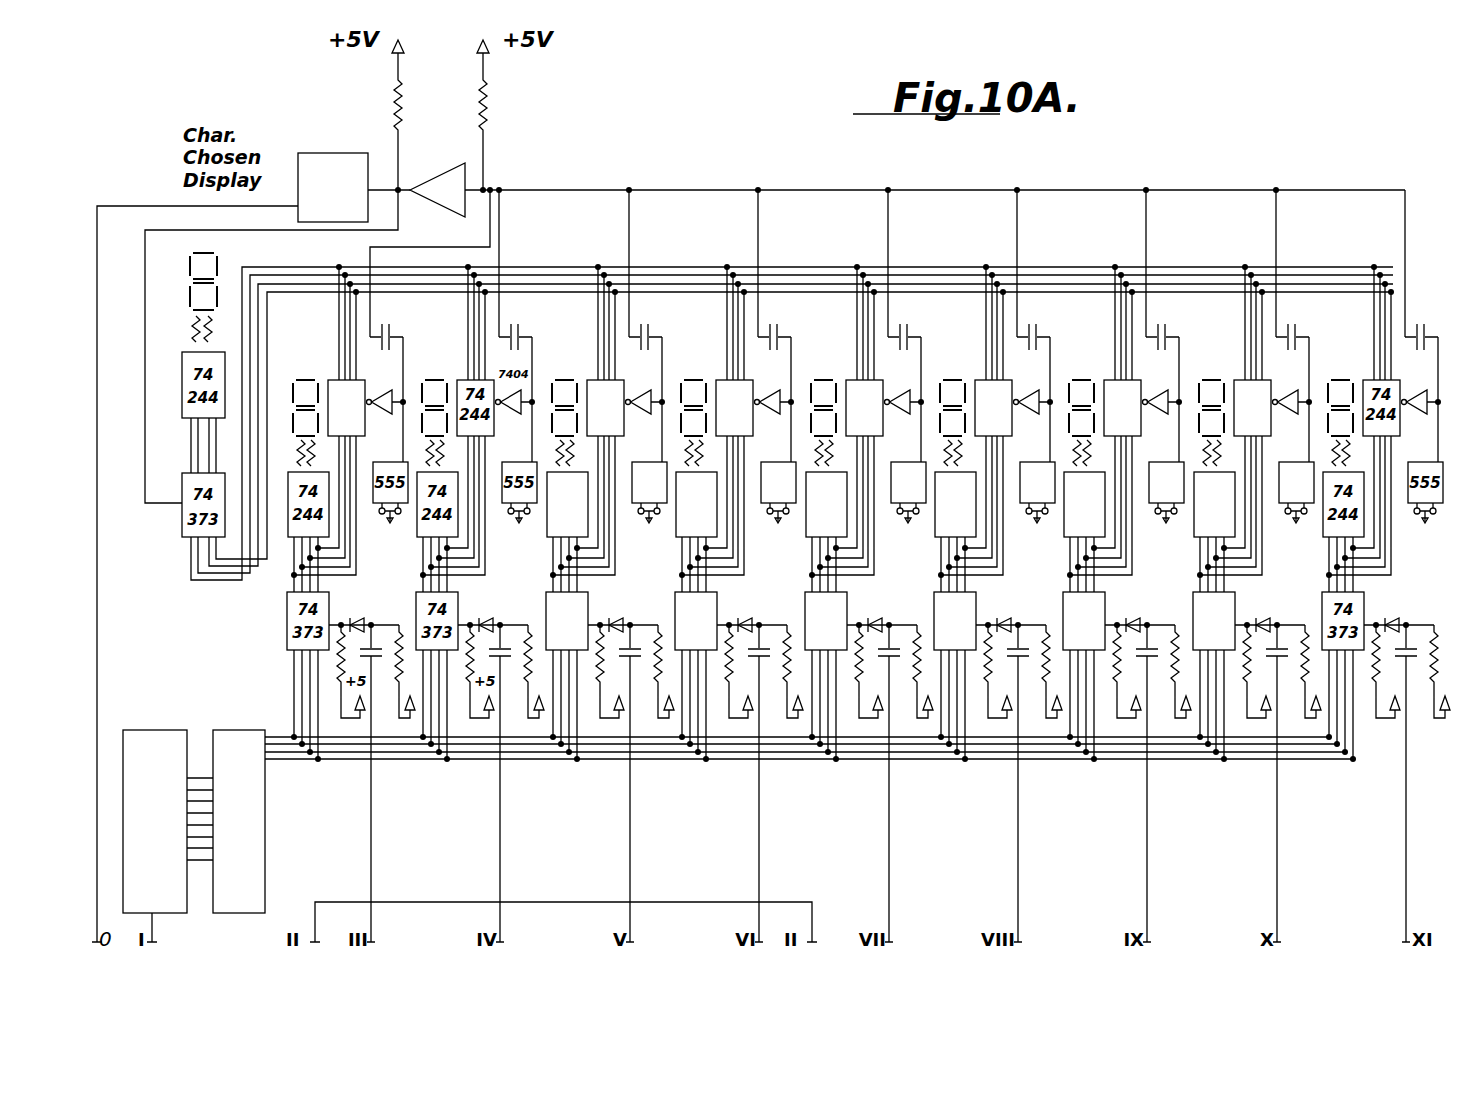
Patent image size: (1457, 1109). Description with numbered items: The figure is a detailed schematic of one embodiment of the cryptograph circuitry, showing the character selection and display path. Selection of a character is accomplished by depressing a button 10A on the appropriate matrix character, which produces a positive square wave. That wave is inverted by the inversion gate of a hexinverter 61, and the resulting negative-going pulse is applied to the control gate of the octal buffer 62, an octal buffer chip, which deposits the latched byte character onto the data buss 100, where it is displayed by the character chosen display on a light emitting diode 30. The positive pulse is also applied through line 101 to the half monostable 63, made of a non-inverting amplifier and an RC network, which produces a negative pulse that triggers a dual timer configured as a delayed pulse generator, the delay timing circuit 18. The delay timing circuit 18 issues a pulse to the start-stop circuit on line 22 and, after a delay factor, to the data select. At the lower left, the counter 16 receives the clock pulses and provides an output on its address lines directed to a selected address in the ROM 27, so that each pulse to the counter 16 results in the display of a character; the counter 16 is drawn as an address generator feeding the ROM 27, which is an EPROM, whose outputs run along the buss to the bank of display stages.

The delay timing circuit 18 is at (307, 153).
The half monostable 63 is at (450, 178).
The line 101 is at (667, 189).
The data buss 100 is at (304, 268).
The light emitting diode 30 is at (296, 390).
The octal buffer 62 is at (359, 395).
The hexinverter 61 is at (372, 414).
The line 22 is at (100, 619).
The counter 16 is at (150, 738).
The ROM 27 is at (238, 738).
The button 10A is at (516, 511).